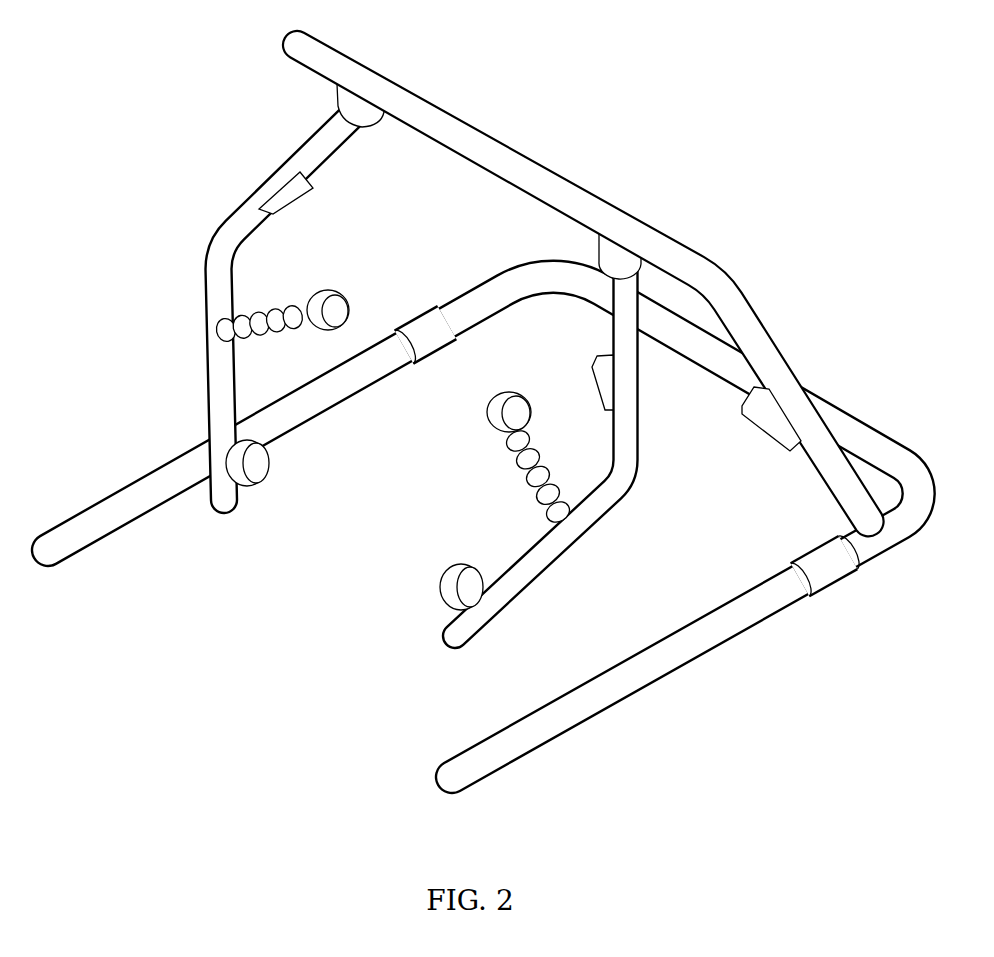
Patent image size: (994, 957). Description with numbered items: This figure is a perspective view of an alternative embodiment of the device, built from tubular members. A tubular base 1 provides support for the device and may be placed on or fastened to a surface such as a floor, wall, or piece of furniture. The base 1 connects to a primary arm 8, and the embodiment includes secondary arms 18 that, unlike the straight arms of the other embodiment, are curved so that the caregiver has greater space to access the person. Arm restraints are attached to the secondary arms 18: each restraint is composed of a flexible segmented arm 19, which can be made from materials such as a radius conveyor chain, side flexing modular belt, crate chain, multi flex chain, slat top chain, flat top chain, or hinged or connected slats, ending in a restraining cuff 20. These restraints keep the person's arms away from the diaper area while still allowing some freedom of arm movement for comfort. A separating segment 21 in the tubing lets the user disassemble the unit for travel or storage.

The base 1 is at (118, 472).
The primary arm 8 is at (572, 171).
The secondary arm 18 is at (192, 281).
The flexible segmented arm 19 is at (276, 297).
The restraining cuff 20 is at (357, 283).
The separating segment 21 is at (834, 601).